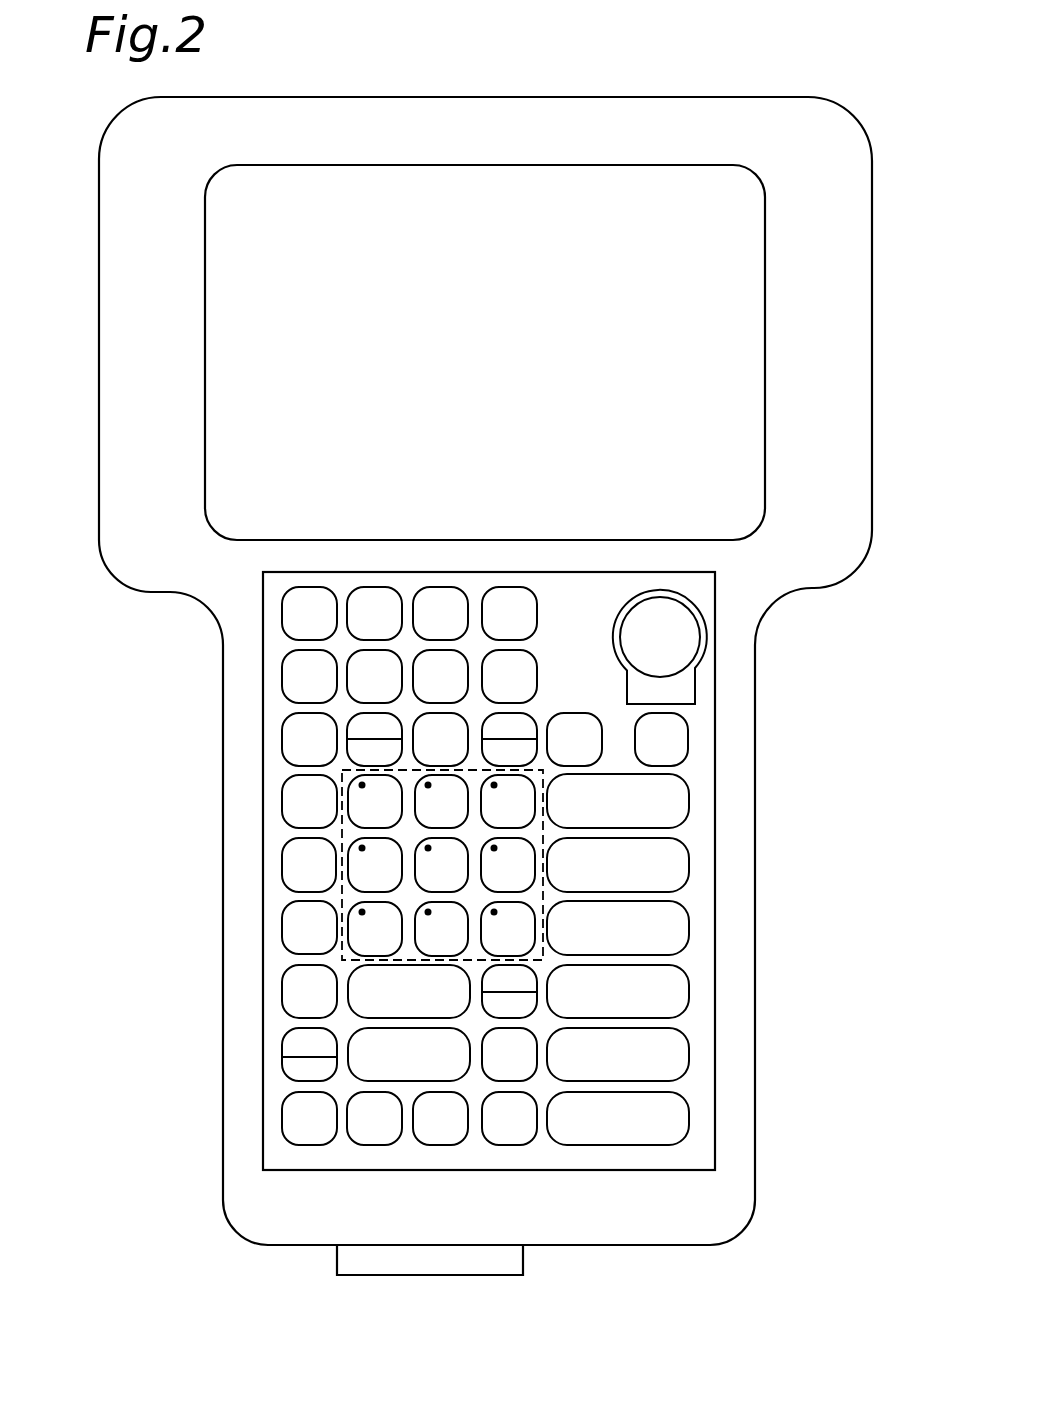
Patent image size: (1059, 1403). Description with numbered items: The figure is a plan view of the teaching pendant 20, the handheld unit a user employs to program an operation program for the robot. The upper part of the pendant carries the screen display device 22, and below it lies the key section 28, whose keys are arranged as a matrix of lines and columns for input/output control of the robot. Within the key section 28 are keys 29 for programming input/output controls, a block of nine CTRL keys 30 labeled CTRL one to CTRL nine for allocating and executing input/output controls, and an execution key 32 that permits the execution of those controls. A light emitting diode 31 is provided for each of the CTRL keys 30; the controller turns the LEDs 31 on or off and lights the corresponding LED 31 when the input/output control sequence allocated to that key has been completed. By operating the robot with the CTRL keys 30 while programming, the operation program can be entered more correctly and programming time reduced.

The teaching pendant 20 is at (777, 73).
The screen display device 22 is at (485, 273).
The key section 28 is at (263, 733).
The keys for programming input/output controls 29 is at (690, 921).
The CTRL keys 30 is at (542, 862).
The light emitting diode 31 is at (494, 785).
The execution key 32 is at (284, 849).